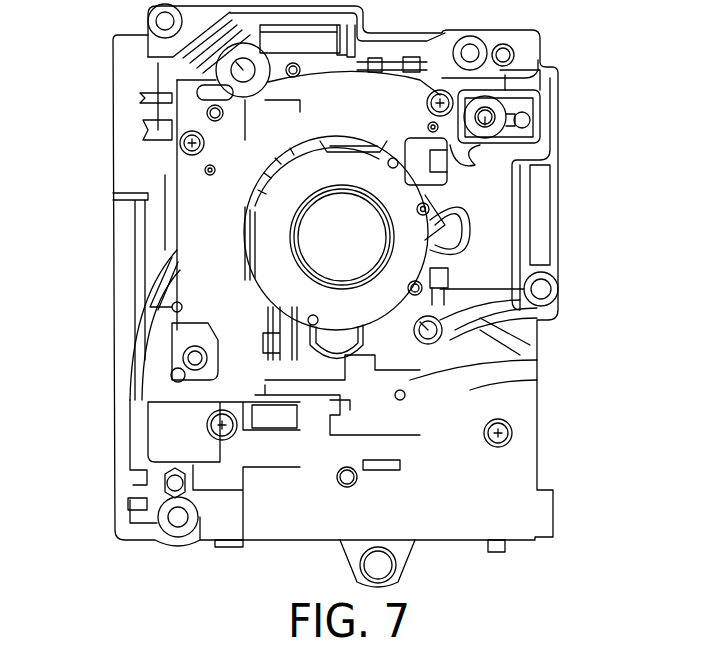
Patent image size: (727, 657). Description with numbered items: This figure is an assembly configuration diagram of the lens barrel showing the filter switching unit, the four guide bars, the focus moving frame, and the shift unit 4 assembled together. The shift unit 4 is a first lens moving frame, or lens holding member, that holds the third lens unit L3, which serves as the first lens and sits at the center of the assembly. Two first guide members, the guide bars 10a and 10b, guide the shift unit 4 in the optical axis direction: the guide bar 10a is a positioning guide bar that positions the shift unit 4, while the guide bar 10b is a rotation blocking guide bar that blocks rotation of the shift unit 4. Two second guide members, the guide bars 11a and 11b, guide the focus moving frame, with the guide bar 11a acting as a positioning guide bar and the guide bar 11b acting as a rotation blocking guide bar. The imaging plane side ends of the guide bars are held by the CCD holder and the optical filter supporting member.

The guide bar 10a is at (218, 62).
The guide bar 10b is at (430, 330).
The guide bar 11a is at (488, 114).
The guide bar 11b is at (170, 355).
The third lens unit L3 is at (343, 238).
The shift unit 4 is at (541, 289).